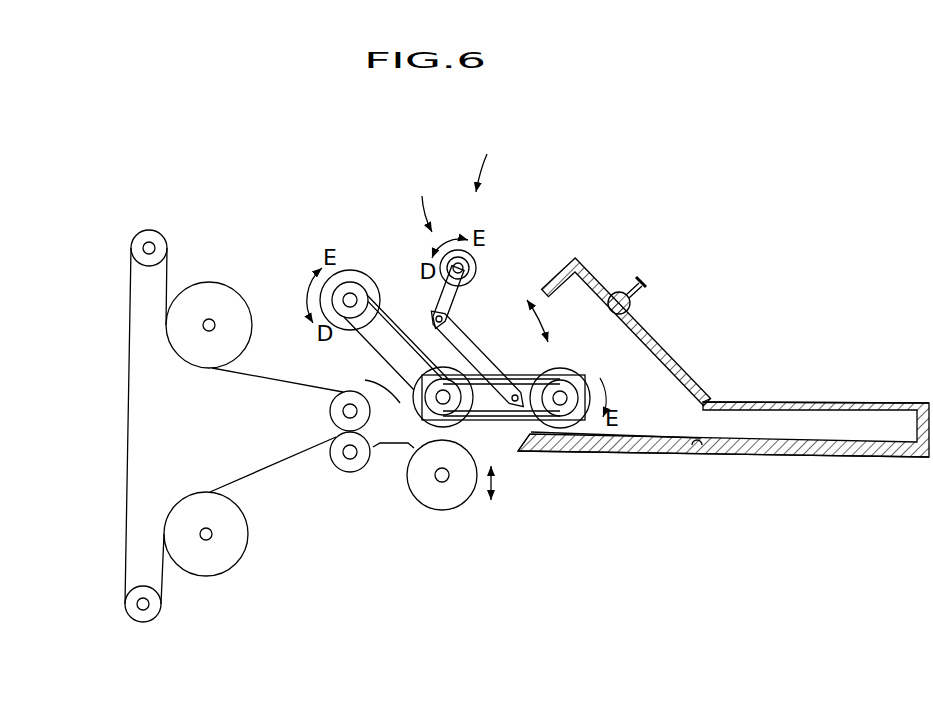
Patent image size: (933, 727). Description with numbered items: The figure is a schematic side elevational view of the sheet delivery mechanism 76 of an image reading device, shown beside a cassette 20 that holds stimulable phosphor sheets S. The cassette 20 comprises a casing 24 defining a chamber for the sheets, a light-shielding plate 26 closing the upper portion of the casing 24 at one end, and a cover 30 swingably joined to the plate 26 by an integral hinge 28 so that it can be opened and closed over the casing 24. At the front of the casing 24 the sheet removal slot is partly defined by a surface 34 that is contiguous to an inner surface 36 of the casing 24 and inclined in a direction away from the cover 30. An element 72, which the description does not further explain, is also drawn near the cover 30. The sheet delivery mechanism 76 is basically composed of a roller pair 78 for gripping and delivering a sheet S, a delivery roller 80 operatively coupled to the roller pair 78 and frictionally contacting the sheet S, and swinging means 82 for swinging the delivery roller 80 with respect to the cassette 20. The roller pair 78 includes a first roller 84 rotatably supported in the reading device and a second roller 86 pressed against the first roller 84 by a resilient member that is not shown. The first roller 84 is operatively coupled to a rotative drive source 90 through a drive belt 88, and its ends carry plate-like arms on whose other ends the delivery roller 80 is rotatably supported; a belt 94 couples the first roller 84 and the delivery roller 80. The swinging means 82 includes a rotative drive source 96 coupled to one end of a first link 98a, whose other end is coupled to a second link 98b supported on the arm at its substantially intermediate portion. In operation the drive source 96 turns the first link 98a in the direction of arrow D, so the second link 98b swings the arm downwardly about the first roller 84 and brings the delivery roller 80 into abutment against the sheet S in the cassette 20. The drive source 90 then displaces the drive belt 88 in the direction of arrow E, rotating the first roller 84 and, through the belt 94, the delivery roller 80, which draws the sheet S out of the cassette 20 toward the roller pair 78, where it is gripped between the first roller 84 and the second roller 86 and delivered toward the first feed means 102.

The first feed means 102 is at (208, 272).
The rotative drive source 90 is at (367, 272).
The drive belt 88 is at (381, 357).
The first roller 84 is at (437, 428).
The swinging means 82 is at (420, 200).
The sheet delivery mechanism 76 is at (483, 150).
The rotative drive source 96 is at (478, 258).
The first link 98a is at (452, 302).
The second link 98b is at (473, 353).
The belt 94 is at (530, 374).
The delivery roller 80 is at (557, 367).
The sensor 72 is at (616, 292).
The cover 30 is at (658, 341).
The integral hinge 28 is at (706, 401).
The cassette 20 is at (772, 372).
The light-shielding plate 26 is at (856, 402).
The casing 24 is at (765, 456).
The inner surface 36 is at (697, 445).
The stimulable phosphor sheet S is at (663, 437).
The surface 34 is at (513, 442).
The roller pair 78 is at (413, 494).
The second roller 86 is at (433, 497).